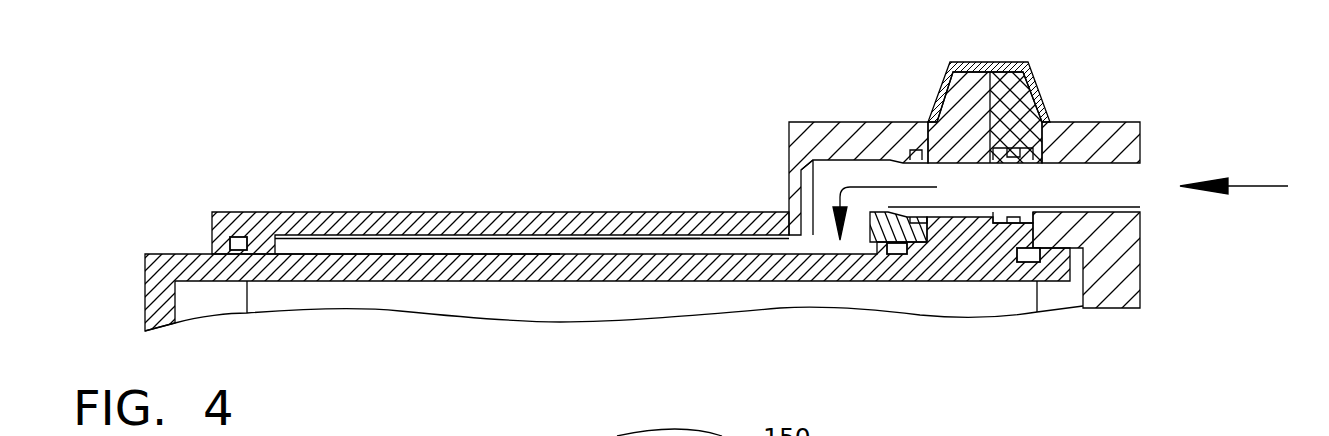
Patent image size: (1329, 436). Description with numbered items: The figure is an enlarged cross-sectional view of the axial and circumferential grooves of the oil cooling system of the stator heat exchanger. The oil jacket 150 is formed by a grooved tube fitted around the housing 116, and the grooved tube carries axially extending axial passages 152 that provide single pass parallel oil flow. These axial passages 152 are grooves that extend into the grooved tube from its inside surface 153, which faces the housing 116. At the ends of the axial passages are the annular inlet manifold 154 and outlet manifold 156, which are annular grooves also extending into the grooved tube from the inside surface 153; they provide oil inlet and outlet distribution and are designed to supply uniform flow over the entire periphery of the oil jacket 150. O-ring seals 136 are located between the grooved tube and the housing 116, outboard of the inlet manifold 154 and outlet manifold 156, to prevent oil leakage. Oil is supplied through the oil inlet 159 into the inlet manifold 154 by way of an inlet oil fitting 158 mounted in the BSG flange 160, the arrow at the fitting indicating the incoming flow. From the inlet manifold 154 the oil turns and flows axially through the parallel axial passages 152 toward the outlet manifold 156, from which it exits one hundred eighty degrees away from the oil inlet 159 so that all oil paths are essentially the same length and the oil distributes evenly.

The housing 116 is at (693, 282).
The O-ring seals 136 is at (240, 238).
The oil jacket 150 is at (618, 243).
The axial passages 152 is at (330, 245).
The inside surface 153 is at (470, 248).
The inlet manifold 154 is at (855, 232).
The outlet manifold 156 is at (287, 245).
The inlet oil fitting 158 is at (1107, 192).
The oil inlet 159 is at (827, 225).
The BSG flange 160 is at (1000, 63).